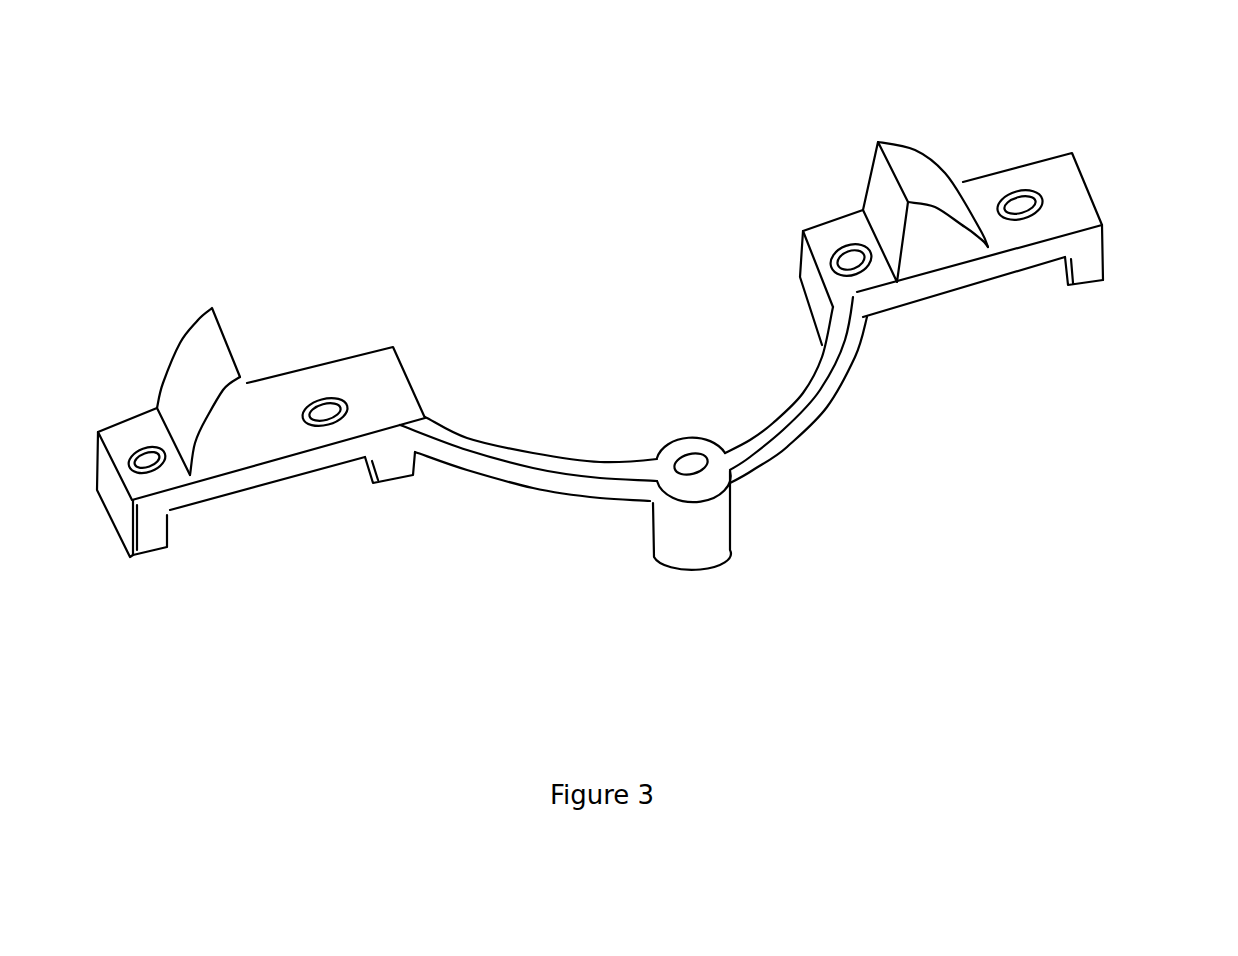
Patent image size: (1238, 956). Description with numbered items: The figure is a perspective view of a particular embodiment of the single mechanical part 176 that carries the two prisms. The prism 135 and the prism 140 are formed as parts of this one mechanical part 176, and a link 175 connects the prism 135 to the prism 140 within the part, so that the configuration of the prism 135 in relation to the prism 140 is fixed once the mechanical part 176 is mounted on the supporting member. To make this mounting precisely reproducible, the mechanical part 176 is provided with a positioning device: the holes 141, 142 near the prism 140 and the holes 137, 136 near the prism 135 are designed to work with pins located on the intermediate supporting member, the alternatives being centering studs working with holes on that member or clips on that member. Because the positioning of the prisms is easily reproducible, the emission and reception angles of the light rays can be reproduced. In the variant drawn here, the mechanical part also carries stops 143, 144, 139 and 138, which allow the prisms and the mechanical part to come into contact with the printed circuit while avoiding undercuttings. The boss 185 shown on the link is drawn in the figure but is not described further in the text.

The prism 135 is at (927, 170).
The hole 136 is at (1042, 203).
The hole 137 is at (833, 252).
The stop 138 is at (1080, 267).
The stop 139 is at (827, 308).
The prism 140 is at (197, 355).
The hole 141 is at (135, 452).
The hole 142 is at (333, 403).
The stop 143 is at (143, 528).
The stop 144 is at (395, 467).
The link 175 is at (623, 492).
The mechanical part 176 is at (587, 214).
The boss 185 is at (695, 522).